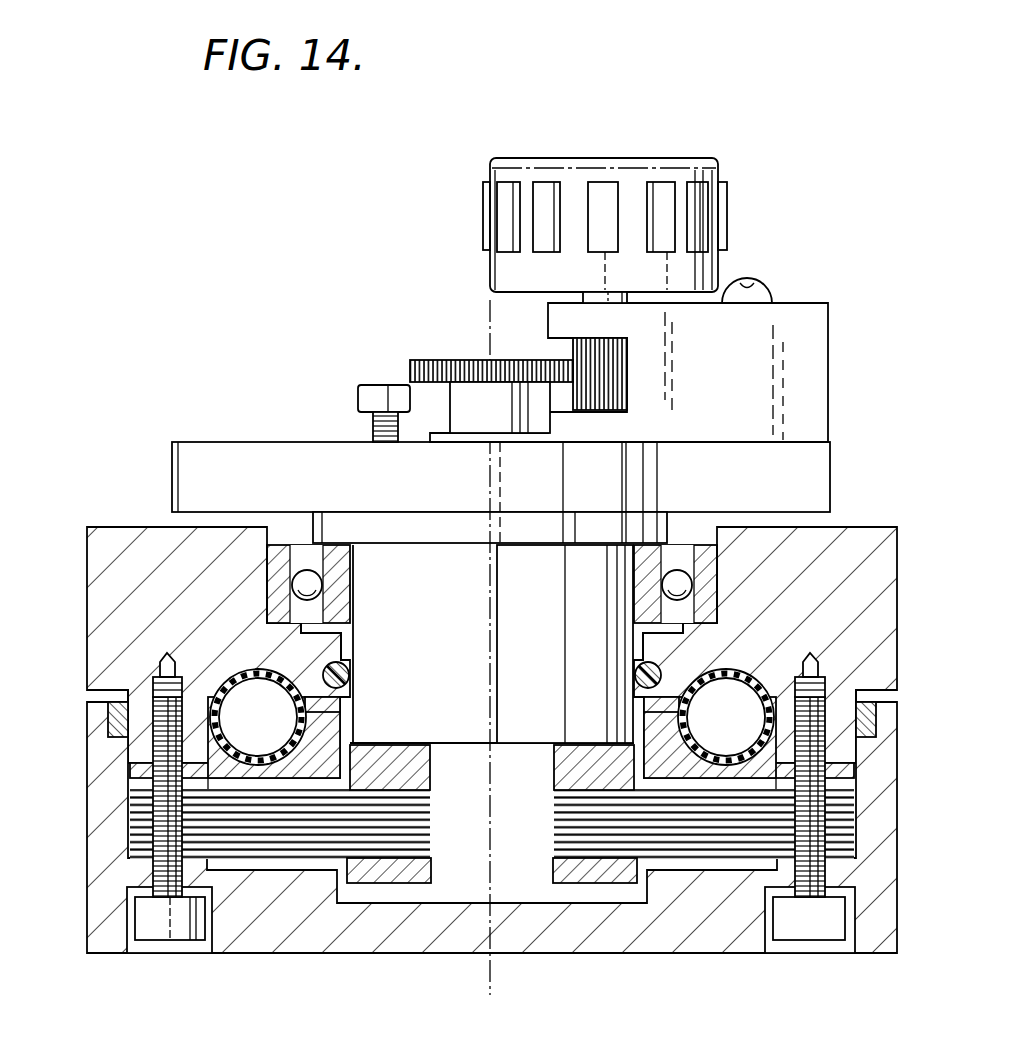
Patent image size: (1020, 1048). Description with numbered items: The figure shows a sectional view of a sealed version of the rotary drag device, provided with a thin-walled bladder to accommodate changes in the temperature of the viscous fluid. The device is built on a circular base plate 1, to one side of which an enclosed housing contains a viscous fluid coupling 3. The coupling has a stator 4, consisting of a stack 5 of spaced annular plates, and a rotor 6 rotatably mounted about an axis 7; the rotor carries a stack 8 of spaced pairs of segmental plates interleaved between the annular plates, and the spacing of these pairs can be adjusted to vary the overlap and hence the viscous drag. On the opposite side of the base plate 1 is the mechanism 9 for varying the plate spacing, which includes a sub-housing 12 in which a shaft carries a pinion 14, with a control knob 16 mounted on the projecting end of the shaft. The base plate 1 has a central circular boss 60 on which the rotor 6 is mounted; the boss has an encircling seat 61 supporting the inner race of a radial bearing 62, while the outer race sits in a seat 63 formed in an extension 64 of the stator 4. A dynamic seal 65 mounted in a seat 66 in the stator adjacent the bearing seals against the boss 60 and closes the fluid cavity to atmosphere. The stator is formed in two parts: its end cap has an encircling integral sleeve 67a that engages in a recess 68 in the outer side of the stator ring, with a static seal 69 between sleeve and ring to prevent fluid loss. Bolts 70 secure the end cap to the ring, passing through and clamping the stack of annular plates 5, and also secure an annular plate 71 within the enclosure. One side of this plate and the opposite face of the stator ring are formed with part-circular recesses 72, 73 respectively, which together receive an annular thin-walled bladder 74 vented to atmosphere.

The base plate 1 is at (180, 452).
The viscous fluid coupling 3 is at (360, 893).
The stator 4 is at (133, 752).
The stack of spaced annular plates 5 is at (198, 828).
The rotor 6 is at (392, 873).
The axis 7 is at (505, 985).
The stack of spaced pairs of segmental plates 8 is at (413, 817).
The mechanism for varying the spacing of the plates 9 is at (455, 323).
The sub-housing 12 is at (808, 310).
The pinion 14 is at (573, 340).
The control knob 16 is at (495, 163).
The central circular boss 60 is at (452, 562).
The encircling seat 61 is at (352, 566).
The radial bearing 62 is at (318, 588).
The seat 63 is at (267, 562).
The extension of the stator 64 is at (130, 535).
The dynamic seal 65 is at (347, 666).
The seat 66 is at (343, 637).
The sleeve 67a is at (97, 803).
The recess 68 is at (133, 688).
The static seal 69 is at (108, 714).
The bolts 70 is at (133, 882).
The annular plate 71 is at (327, 738).
The part circular cross-section recess 72 is at (342, 708).
The part circular cross-section recess 73 is at (237, 670).
The annular thin-walled bladder 74 is at (257, 673).